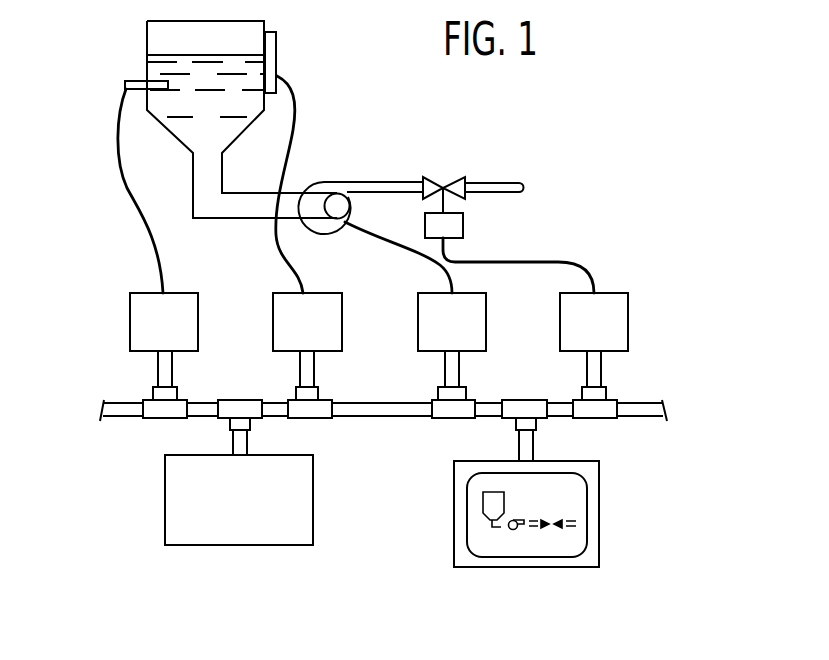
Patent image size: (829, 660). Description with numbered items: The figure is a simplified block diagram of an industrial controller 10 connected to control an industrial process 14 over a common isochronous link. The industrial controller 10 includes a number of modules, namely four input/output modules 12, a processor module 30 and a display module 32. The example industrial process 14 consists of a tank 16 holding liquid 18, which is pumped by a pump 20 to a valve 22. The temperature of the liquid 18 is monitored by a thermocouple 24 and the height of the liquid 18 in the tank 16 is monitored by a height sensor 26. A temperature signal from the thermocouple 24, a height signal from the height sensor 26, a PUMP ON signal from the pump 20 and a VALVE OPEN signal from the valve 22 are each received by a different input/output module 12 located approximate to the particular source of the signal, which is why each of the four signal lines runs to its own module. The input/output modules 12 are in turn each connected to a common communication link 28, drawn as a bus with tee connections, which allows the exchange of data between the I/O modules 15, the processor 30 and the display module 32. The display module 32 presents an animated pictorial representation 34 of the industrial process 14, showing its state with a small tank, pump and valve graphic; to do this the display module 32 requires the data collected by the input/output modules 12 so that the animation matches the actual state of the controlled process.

The industrial controller 10 is at (651, 238).
The input/output modules 12 is at (130, 302).
The industrial process 14 is at (570, 98).
The I/O modules 15 is at (108, 353).
The tank 16 is at (147, 55).
The liquid 18 is at (190, 125).
The pump 20 is at (338, 182).
The valve 22 is at (452, 182).
The thermocouple 24 is at (130, 80).
The height sensor 26 is at (277, 48).
The common communication link 28 is at (397, 402).
The processor module 30 is at (313, 482).
The display module 32 is at (600, 482).
The animated pictorial representation 34 is at (572, 507).